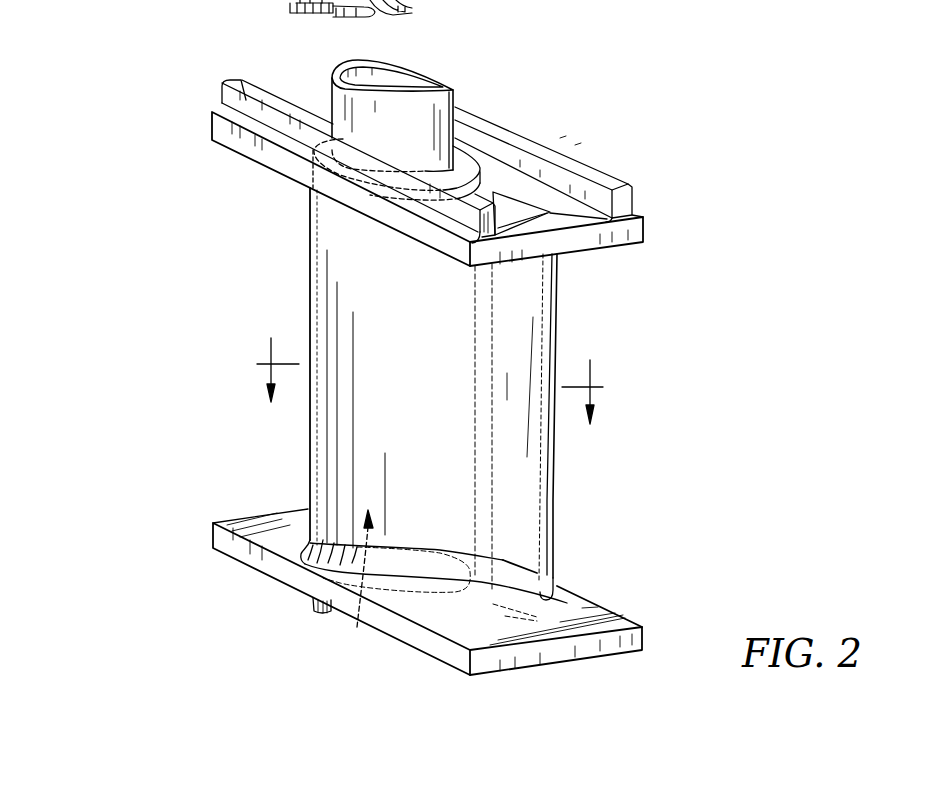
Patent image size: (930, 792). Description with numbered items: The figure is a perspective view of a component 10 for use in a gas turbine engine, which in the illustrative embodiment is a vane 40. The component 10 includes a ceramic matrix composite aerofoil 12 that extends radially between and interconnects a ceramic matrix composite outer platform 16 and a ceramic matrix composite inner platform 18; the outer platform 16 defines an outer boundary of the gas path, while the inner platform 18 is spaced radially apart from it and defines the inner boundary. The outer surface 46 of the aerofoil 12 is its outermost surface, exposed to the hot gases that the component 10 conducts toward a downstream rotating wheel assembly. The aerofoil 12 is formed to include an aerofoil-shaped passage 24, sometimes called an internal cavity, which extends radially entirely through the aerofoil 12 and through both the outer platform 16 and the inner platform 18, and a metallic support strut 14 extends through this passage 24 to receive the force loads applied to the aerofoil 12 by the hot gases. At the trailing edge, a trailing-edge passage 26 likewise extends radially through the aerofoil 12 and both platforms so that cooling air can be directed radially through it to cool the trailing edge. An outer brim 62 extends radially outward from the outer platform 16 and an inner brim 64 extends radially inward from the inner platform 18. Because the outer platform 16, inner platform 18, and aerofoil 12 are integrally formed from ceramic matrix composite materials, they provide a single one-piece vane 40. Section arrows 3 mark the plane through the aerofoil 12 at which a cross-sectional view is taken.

The component 10 is at (120, 128).
The ceramic matrix composite aerofoil 12 is at (309, 248).
The metallic support strut 14 is at (422, 103).
The ceramic matrix composite outer platform 16 is at (647, 227).
The ceramic matrix composite inner platform 18 is at (645, 635).
The passage 24 is at (357, 627).
The trailing-edge passage 26 is at (522, 193).
The vane 40 is at (645, 469).
The outer surface 46 is at (373, 412).
The outer brim 62 is at (466, 179).
The inner brim 64 is at (313, 602).
The section line 3- 3 is at (430, 366).